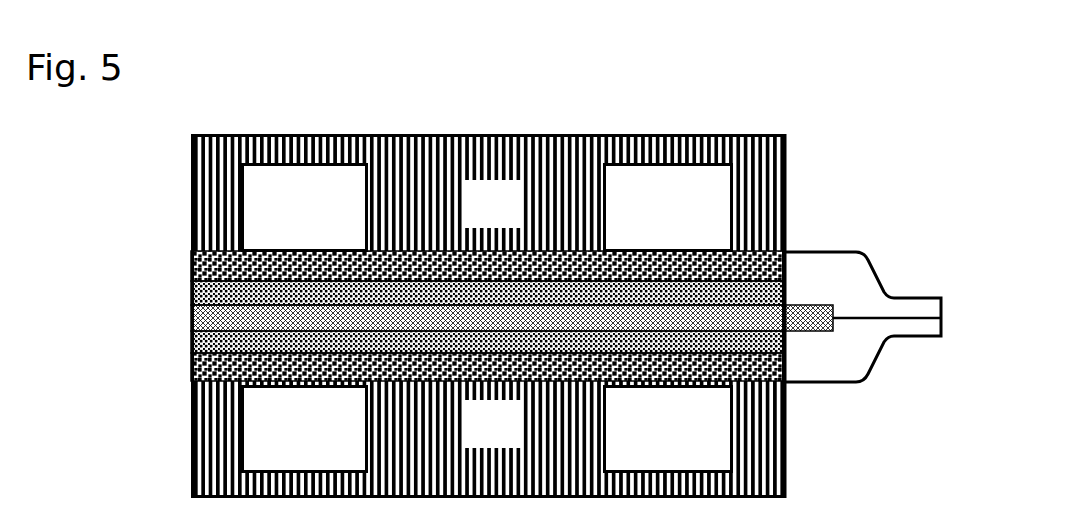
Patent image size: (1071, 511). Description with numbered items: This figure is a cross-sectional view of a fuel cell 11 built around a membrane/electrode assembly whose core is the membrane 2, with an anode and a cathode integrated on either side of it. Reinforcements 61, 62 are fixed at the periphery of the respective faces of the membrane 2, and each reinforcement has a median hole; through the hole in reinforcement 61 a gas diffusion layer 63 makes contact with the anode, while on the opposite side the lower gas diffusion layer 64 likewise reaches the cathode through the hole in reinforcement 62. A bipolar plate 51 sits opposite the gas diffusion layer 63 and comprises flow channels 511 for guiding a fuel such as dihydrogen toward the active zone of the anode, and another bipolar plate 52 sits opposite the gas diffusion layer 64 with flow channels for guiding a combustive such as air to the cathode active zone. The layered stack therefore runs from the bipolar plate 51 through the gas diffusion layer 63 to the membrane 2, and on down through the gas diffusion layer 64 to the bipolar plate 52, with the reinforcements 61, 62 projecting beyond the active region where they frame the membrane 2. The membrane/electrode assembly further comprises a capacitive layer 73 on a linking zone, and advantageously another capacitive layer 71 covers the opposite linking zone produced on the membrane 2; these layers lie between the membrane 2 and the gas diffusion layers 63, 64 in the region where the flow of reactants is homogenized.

The battery cell / device 11 is at (126, 146).
The bipolar plate 51 is at (473, 208).
The bipolar plate 52 is at (473, 427).
The flow channels 511 is at (270, 214).
The gas diffusion layer 63 is at (183, 257).
The gas diffusion layer 64 is at (183, 358).
The first electrode layer 71 is at (203, 279).
The capacitive layer 73 is at (203, 327).
The membrane 2 is at (205, 310).
The reinforcement 61 is at (813, 243).
The reinforcement 62 is at (870, 357).